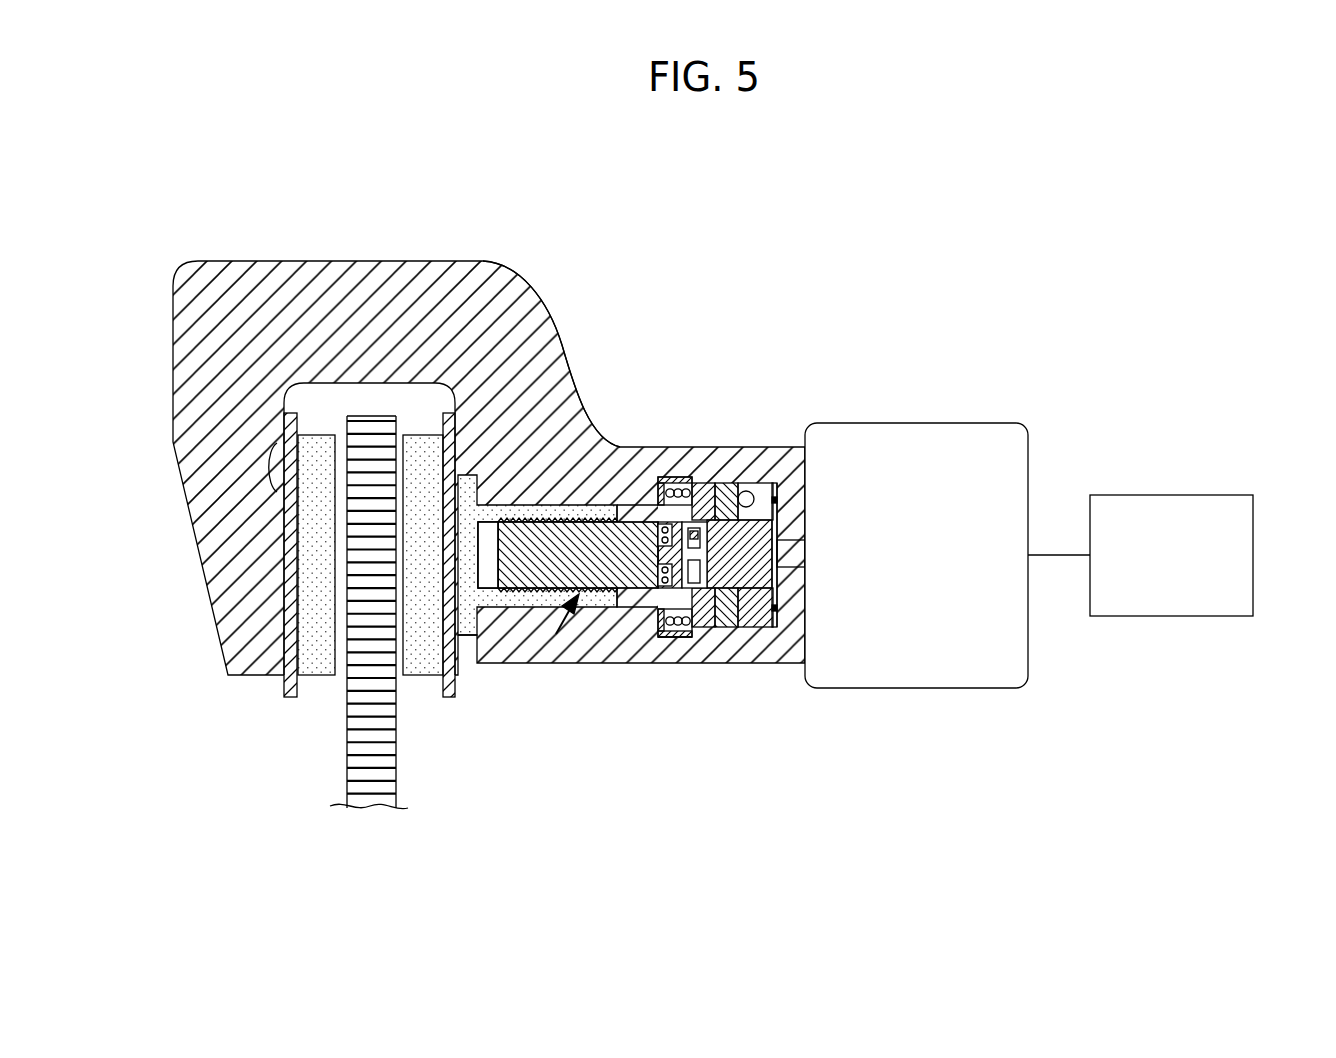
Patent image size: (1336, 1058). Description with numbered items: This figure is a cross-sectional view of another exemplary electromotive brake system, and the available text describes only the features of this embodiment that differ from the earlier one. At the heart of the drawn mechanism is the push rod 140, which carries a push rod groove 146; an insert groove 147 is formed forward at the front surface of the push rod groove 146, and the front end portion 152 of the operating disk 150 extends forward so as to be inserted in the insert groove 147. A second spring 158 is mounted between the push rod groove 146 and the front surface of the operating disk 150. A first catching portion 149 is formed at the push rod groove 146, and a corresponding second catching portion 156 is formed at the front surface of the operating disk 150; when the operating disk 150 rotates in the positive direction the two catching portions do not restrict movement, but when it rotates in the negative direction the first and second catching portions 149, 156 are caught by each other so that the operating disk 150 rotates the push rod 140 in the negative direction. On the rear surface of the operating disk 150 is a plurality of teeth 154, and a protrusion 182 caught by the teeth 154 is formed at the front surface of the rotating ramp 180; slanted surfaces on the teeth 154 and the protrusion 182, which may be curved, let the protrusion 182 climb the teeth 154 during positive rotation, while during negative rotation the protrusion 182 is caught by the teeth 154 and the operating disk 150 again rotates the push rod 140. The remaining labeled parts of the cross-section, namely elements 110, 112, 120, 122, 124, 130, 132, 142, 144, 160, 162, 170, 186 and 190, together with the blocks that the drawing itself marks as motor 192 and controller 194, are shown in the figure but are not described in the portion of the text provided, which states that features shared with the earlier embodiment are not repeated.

The housing 110 is at (402, 283).
The guide cavity 112 is at (317, 398).
The rack 120 is at (387, 787).
The left guide pad 122 is at (313, 677).
The right guide pad 124 is at (425, 677).
The screw drive assembly 130 is at (466, 478).
The housing curved wall 132 is at (538, 378).
The push rod 140 is at (560, 615).
The nut bracket 142 is at (517, 607).
The hub 144 is at (720, 490).
The push rod groove 146 is at (670, 477).
The insert groove 147 is at (623, 500).
The first catching portion 149 is at (640, 640).
The operating disk 150 is at (790, 496).
The front end portion 152 is at (637, 500).
The plurality of teeth 154 is at (700, 647).
The second catching portion 156 is at (700, 650).
The second spring 158 is at (667, 500).
The bearing holder 160 is at (668, 650).
The lower thrust bearing 162 is at (675, 637).
The ball 170 is at (742, 478).
The rotating ramp 180 is at (807, 585).
The protrusion 182 is at (748, 645).
The plate 186 is at (778, 492).
The spring plate 190 is at (773, 480).
The motor 192 is at (982, 690).
The controller 194 is at (1172, 495).